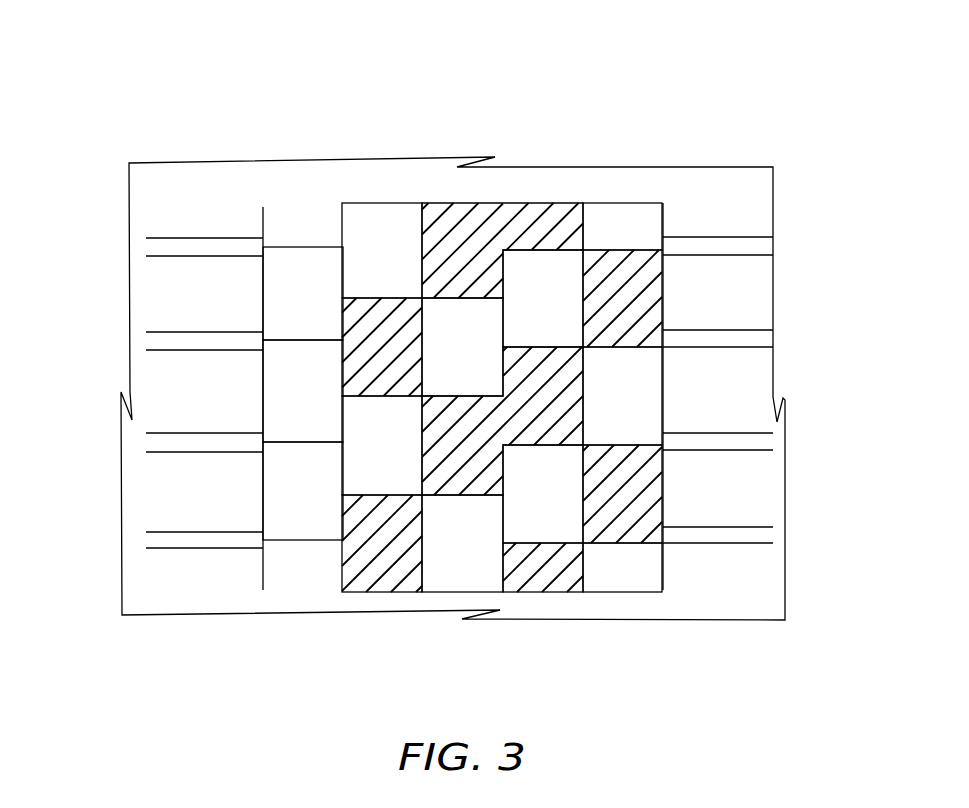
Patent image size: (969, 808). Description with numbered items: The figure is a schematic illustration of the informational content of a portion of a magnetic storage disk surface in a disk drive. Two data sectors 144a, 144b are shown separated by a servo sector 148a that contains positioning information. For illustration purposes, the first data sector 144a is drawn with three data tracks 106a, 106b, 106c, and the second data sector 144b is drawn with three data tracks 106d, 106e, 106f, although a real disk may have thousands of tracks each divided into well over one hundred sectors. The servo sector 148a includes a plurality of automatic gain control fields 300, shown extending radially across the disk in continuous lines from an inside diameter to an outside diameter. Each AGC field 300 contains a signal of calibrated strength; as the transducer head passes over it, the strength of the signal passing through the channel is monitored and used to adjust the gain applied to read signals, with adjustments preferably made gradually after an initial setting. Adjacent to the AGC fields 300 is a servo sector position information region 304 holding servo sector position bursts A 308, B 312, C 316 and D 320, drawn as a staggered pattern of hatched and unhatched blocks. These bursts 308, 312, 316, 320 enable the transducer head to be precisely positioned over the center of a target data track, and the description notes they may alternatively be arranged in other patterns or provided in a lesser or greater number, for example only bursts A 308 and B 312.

The data track 106a is at (148, 302).
The data track 106b is at (142, 385).
The data track 106c is at (145, 500).
The data track 106d is at (762, 312).
The data track 106e is at (768, 387).
The data track 106f is at (760, 488).
The data sector 144a is at (133, 137).
The data sector 144b is at (668, 135).
The servo sector 148a is at (665, 135).
The automatic gain control (AGC) field 300 is at (300, 527).
The servo sector position information region 304 is at (662, 65).
The servo sector position burst A 308 is at (383, 480).
The servo sector position burst B 312 is at (447, 573).
The servo sector position burst C 316 is at (558, 530).
The servo sector position burst D 320 is at (640, 430).